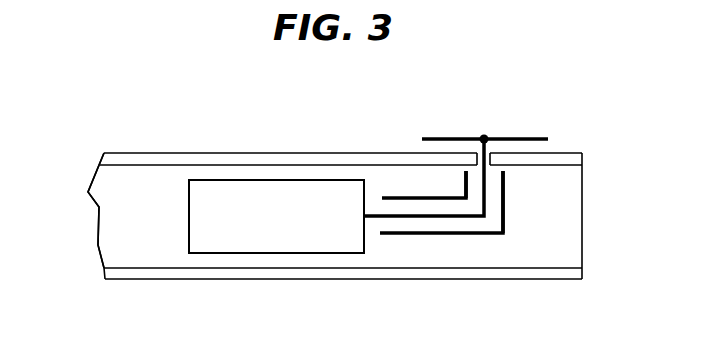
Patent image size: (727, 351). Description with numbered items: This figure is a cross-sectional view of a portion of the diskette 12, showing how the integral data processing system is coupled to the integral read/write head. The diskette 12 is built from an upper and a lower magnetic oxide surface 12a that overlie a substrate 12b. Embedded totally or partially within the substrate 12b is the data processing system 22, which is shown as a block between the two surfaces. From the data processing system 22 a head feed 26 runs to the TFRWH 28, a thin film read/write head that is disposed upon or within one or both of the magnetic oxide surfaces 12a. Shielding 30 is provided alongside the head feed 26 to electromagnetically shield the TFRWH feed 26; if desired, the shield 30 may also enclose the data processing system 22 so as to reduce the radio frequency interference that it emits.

The diskette 12 is at (603, 183).
The magnetic oxide surface 12a is at (148, 155).
The substrate 12b is at (92, 205).
The data processing system 22 is at (189, 220).
The head feed 26 is at (448, 219).
The TFRWH 28 is at (450, 137).
The shielding 30 is at (468, 188).